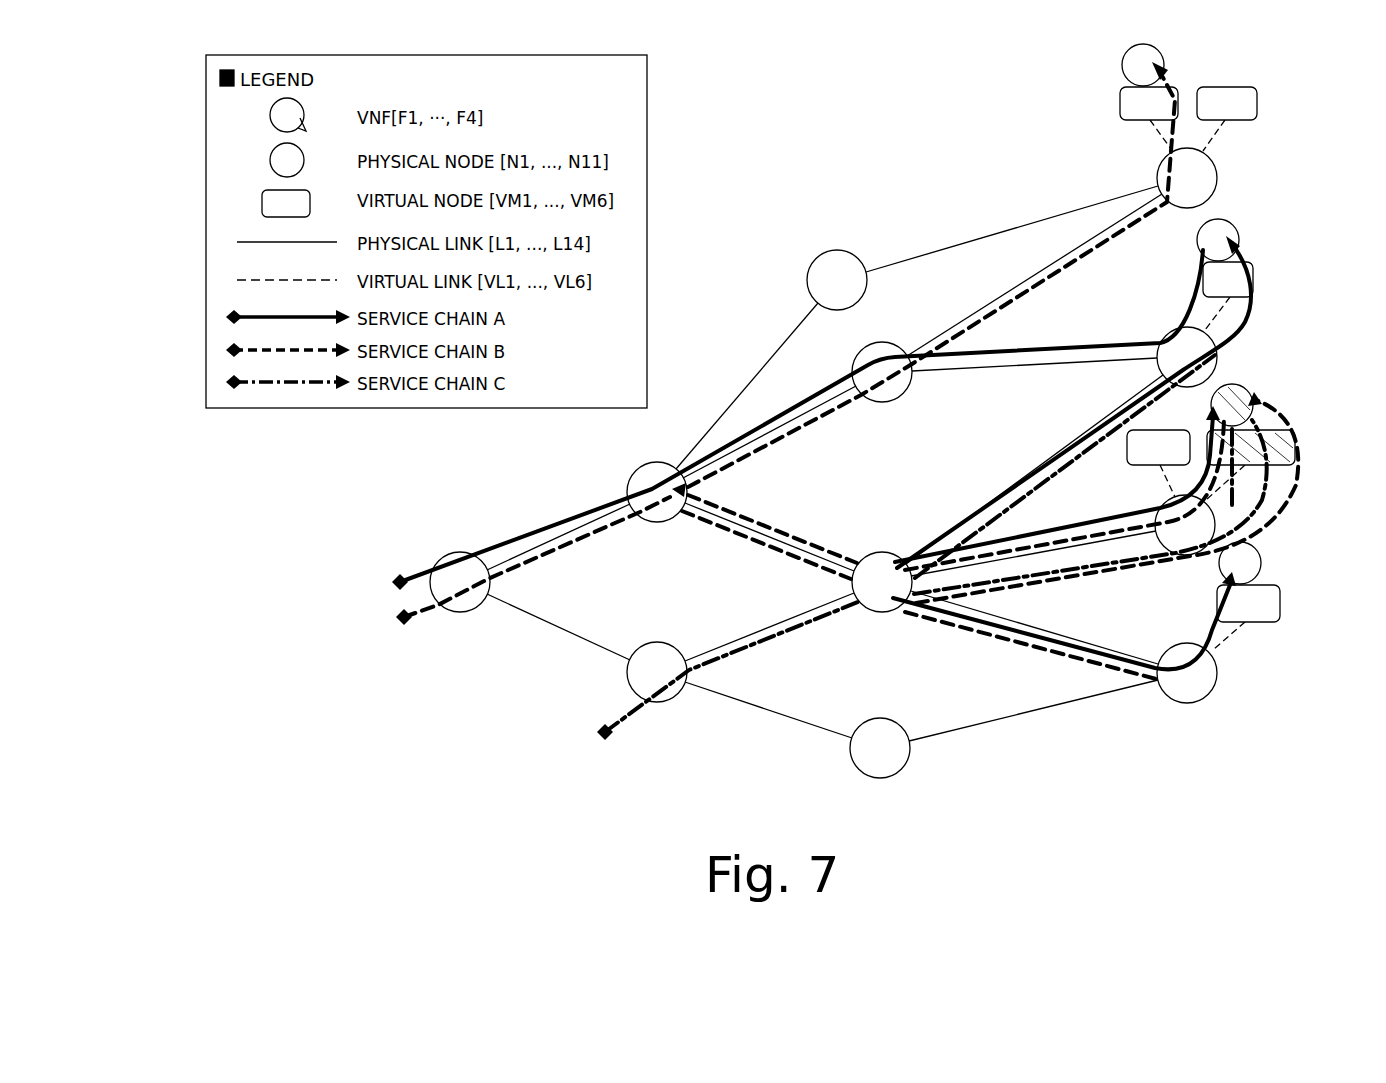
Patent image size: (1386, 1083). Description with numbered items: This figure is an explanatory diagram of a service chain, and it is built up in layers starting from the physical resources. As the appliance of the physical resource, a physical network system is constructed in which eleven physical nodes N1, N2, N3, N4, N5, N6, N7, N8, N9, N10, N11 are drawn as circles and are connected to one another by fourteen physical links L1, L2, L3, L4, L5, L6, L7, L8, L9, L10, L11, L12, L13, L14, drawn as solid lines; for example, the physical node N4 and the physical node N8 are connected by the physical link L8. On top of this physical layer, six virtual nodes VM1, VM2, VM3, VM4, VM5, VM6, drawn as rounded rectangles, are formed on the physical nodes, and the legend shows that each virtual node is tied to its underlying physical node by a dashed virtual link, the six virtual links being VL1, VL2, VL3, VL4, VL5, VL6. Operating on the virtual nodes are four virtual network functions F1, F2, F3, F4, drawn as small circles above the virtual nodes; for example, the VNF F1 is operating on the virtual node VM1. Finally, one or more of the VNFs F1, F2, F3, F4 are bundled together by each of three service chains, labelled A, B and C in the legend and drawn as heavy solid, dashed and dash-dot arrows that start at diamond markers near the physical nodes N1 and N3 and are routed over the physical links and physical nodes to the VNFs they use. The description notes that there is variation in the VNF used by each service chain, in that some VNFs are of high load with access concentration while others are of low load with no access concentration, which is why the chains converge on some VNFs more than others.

The physical node N1 is at (460, 582).
The physical node N2 is at (657, 492).
The physical node N3 is at (657, 672).
The physical node N4 is at (837, 280).
The physical node N5 is at (882, 372).
The physical node N6 is at (882, 582).
The physical node N7 is at (880, 748).
The physical node N8 is at (1187, 178).
The physical node N9 is at (1187, 357).
The physical node N10 is at (1185, 525).
The physical node N11 is at (1187, 673).
The physical link L1 is at (560, 528).
The physical link L2 is at (553, 630).
The physical link L3 is at (785, 336).
The physical link L4 is at (795, 411).
The physical link L5 is at (776, 528).
The physical link L6 is at (791, 614).
The physical link L7 is at (780, 716).
The physical link L8 is at (1034, 219).
The physical link L9 is at (984, 304).
The physical link L10 is at (975, 370).
The physical link L11 is at (994, 490).
The physical link L12 is at (1059, 538).
The physical link L13 is at (1075, 638).
The physical link L14 is at (1065, 706).
The virtual link VL1 is at (1160, 136).
The virtual link VL2 is at (1224, 138).
The virtual link VL3 is at (1223, 314).
The virtual link VL4 is at (1170, 483).
The virtual link VL5 is at (1269, 480).
The virtual link VL6 is at (1231, 644).
The virtual node VM1 is at (1149, 103).
The virtual node VM2 is at (1227, 103).
The virtual node VM3 is at (1228, 279).
The virtual node VM4 is at (1158, 447).
The virtual node VM5 is at (1251, 447).
The virtual node VM6 is at (1248, 603).
The VNF F1 is at (1143, 65).
The VNF F2 is at (1218, 240).
The VNF F3 is at (1232, 405).
The VNF F4 is at (1240, 563).